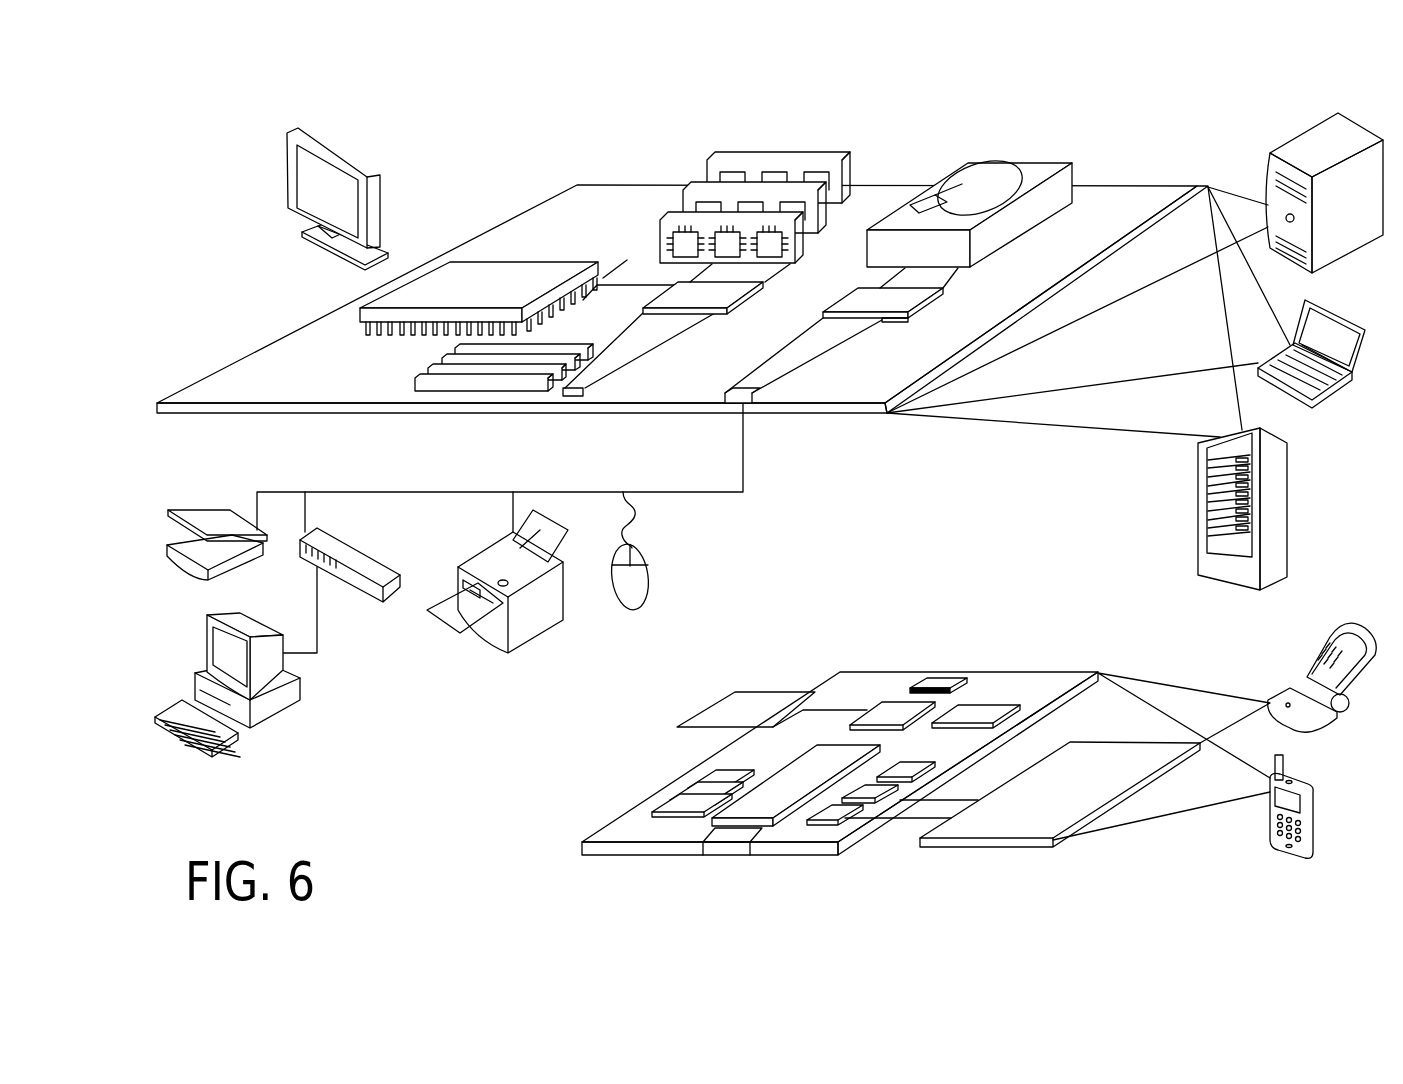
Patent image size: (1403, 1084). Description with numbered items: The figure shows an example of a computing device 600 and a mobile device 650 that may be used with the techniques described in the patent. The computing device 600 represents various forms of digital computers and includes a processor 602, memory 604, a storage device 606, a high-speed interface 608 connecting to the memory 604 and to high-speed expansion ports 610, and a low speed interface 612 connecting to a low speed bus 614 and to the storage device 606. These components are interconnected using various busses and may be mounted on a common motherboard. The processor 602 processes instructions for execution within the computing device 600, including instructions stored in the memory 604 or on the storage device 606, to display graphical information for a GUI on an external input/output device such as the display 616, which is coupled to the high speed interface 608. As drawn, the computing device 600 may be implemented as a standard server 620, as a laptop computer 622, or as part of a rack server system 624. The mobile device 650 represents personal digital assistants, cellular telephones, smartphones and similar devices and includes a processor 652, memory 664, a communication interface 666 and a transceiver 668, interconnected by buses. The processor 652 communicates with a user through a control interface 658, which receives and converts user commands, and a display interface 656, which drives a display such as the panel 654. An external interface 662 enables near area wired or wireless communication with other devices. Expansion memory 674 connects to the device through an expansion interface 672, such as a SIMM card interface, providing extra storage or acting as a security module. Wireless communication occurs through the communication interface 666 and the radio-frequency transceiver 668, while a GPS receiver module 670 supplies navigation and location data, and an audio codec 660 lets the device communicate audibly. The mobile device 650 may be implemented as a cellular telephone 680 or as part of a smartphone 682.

The computing device 600 is at (226, 108).
The processor 602 is at (376, 304).
The memory 604 is at (765, 158).
The storage device 606 is at (1050, 163).
The high-speed interface 608 is at (700, 290).
The high-speed expansion ports 610 is at (276, 346).
The low speed interface 612 is at (857, 293).
The low speed bus 614 is at (760, 385).
The display 616 is at (366, 170).
The standard server 620 is at (1303, 152).
The laptop computer 622 is at (1312, 402).
The rack server system 624 is at (1198, 487).
The mobile device 650 is at (552, 876).
The processor 652 is at (767, 808).
The display panel 654 is at (1037, 822).
The display interface 656 is at (837, 822).
The control interface 658 is at (873, 794).
The audio codec 660 is at (908, 769).
The external interface 662 is at (723, 847).
The memory 664 is at (680, 794).
The communication interface 666 is at (893, 707).
The transceiver 668 is at (980, 708).
The GPS receiver module 670 is at (947, 678).
The expansion interface 672 is at (827, 682).
The expansion memory 674 is at (718, 706).
The cellular telephone 680 is at (1307, 641).
The smartphone 682 is at (1268, 780).